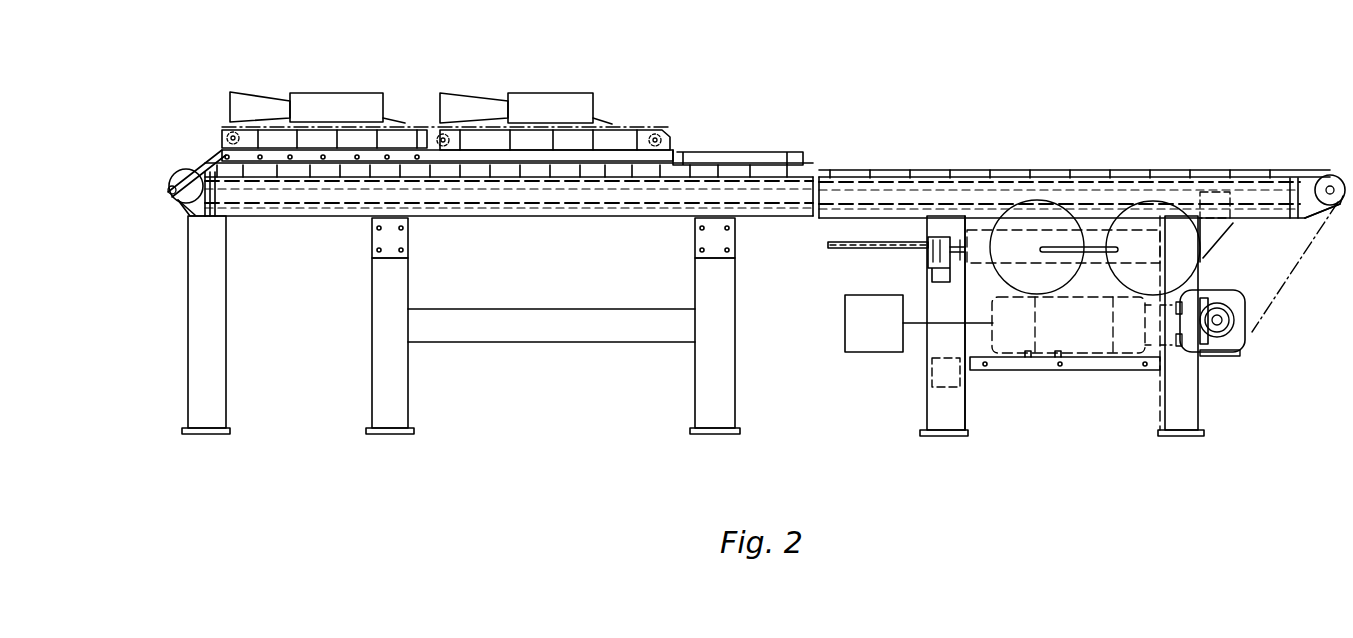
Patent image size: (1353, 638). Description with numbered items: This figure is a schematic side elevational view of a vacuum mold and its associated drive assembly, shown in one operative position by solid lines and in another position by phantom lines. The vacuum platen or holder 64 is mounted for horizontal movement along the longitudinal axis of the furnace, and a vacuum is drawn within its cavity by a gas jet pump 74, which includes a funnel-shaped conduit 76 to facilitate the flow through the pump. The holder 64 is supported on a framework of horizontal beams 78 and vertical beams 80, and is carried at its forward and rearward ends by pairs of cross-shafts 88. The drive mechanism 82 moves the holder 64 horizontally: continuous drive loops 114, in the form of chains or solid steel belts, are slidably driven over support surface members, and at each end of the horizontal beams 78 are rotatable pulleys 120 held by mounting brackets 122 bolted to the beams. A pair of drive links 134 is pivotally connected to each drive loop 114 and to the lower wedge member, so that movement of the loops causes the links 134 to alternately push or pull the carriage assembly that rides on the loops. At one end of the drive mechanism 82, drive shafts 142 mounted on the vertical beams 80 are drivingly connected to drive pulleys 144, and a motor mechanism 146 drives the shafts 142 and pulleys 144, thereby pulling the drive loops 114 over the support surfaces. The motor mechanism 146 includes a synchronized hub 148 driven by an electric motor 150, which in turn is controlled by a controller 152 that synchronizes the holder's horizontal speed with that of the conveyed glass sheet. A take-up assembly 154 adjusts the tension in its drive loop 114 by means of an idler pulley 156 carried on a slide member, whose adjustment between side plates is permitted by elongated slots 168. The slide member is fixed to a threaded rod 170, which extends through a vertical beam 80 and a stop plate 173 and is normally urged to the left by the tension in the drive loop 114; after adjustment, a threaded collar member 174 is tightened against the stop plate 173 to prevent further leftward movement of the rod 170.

The vacuum platen or holder 64 is at (702, 107).
The gas jet pump 74 is at (377, 91).
The funnel-shaped conduit 76 is at (264, 99).
The horizontal beams 78 is at (512, 220).
The vertical beams 80 is at (410, 404).
The drive mechanism 82 is at (176, 136).
The cross-shafts 88 is at (233, 132).
The drive loops 114 is at (1276, 300).
The pulleys 120 is at (172, 206).
The mounting brackets 122 is at (196, 215).
The drive links 134 is at (220, 167).
The drive shafts 142 is at (1223, 321).
The drive pulleys 144 is at (1240, 352).
The motor mechanism 146 is at (958, 292).
The synchronized hub 148 is at (1202, 356).
The electric motor 150 is at (978, 372).
The controller 152 is at (858, 345).
The take-up assembly 154 is at (1210, 262).
The idler pulley 156 is at (1043, 294).
The elongated slots 168 is at (1047, 250).
The threaded rod 170 is at (828, 245).
The stop plate 173 is at (938, 240).
The threaded collar member 174 is at (946, 244).